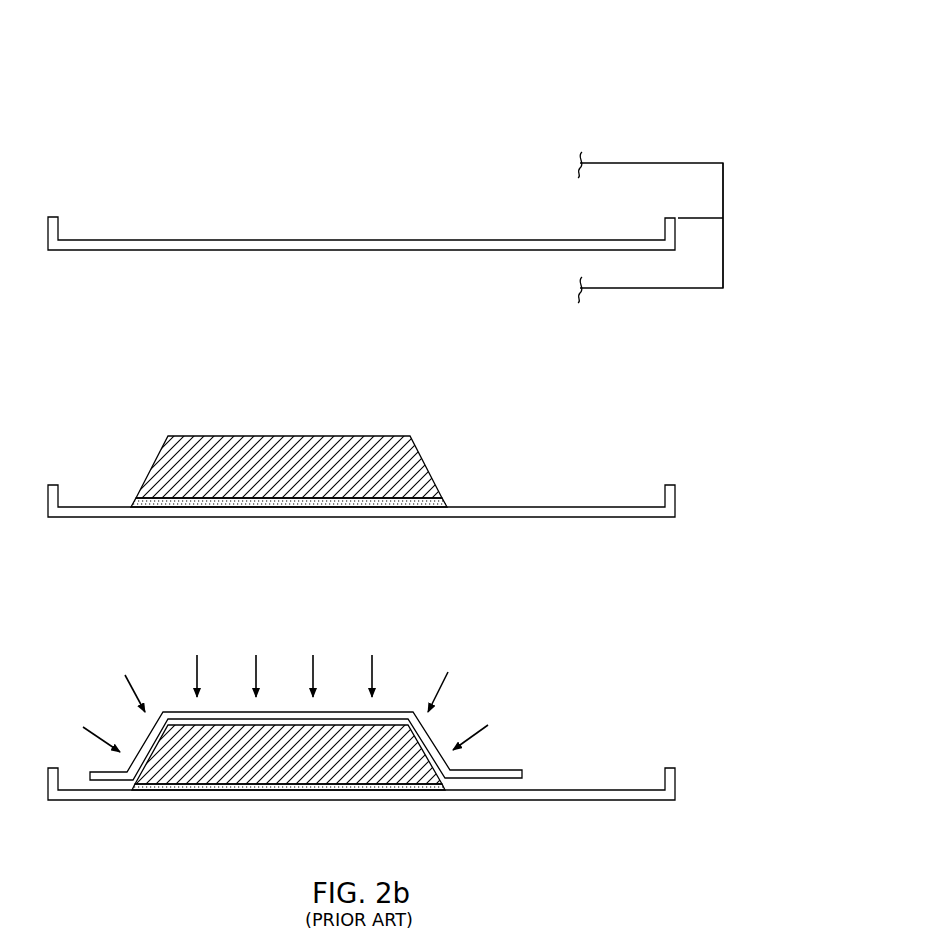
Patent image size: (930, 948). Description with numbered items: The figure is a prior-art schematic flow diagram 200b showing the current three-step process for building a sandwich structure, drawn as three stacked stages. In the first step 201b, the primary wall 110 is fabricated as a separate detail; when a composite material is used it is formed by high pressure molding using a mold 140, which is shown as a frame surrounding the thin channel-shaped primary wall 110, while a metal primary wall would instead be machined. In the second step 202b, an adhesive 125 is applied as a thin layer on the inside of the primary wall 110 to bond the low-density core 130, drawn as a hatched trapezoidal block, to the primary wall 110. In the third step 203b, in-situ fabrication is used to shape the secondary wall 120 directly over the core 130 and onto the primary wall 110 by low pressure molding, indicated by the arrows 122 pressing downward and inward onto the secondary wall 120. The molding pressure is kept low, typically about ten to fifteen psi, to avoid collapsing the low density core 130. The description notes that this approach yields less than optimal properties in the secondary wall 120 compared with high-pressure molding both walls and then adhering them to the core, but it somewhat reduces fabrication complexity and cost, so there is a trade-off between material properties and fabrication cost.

The schematic flow diagram 200b is at (573, 45).
The first step 201b is at (382, 207).
The second step 202b is at (67, 372).
The third step 203b is at (67, 653).
The primary wall 110 is at (517, 240).
The mold 140 is at (697, 255).
The low-density core 130 is at (285, 440).
The adhesive 125 is at (447, 500).
The secondary wall 120 is at (286, 712).
The arrows 122 is at (197, 660).